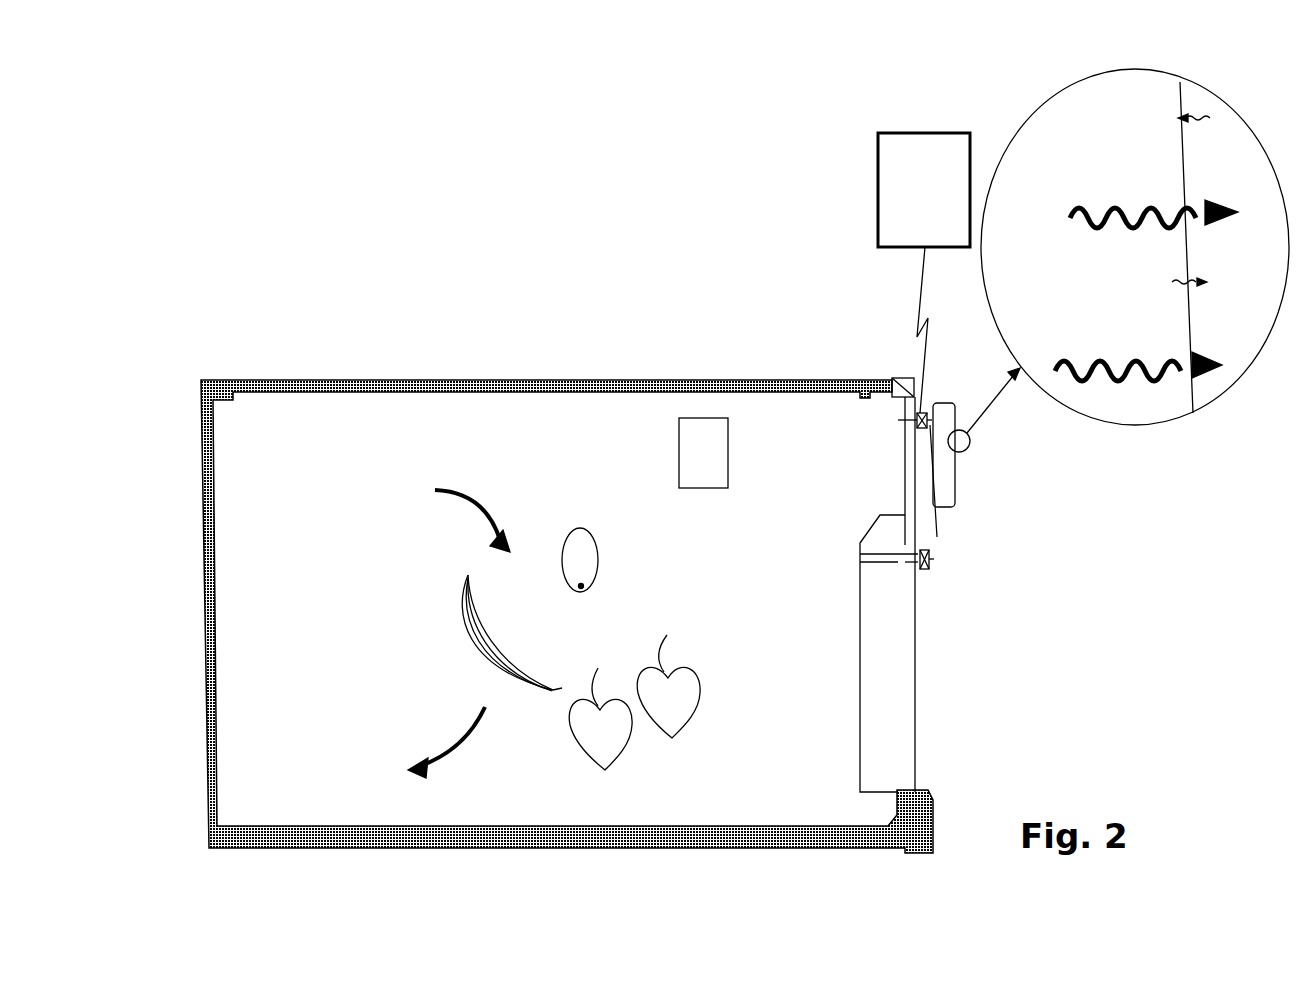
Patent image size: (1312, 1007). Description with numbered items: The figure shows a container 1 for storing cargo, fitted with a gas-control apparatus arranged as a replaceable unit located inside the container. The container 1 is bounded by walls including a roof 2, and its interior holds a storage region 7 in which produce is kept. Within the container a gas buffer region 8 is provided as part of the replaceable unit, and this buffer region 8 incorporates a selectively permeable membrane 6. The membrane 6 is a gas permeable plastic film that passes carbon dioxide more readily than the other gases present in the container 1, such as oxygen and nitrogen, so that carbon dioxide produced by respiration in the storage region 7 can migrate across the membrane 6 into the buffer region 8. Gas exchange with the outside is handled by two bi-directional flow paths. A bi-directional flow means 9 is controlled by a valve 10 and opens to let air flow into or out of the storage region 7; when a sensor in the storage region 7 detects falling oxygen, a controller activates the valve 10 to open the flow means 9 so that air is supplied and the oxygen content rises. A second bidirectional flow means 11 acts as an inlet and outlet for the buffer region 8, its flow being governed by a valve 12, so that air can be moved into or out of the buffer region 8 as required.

The container 1 is at (490, 280).
The roof 2 is at (668, 380).
The membrane 6 is at (1163, 92).
The storage region 7 is at (339, 436).
The gas buffer region 8 is at (953, 480).
The bi-directional flow means 9 is at (858, 557).
The valve 10 is at (925, 572).
The bidirectional flow means 11 is at (900, 423).
The valve 12 is at (925, 352).